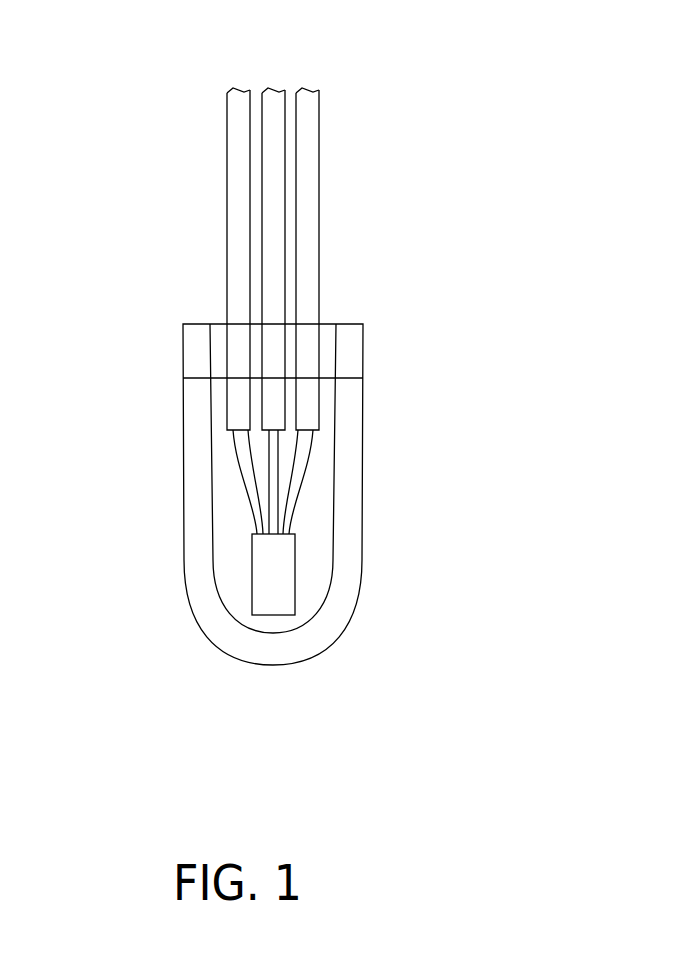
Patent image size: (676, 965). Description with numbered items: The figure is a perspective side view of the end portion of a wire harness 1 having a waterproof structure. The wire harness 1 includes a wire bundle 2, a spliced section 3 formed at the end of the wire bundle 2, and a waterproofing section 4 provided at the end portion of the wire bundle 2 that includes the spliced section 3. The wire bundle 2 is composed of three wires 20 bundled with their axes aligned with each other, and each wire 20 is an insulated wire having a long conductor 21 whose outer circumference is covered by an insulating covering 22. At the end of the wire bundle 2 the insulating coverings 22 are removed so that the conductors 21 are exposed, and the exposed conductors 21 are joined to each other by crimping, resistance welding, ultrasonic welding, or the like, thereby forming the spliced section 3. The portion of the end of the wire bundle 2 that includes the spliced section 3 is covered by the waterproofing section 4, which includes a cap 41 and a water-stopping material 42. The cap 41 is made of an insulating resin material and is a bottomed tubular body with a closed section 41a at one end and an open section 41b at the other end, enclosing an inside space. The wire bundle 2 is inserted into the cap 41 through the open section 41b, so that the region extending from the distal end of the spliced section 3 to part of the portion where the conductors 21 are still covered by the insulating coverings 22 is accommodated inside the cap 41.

The wire harness 1 is at (312, 401).
The wire bundle 2 is at (276, 280).
The wires 20 is at (187, 82).
The insulating covering 22 is at (305, 239).
The conductor 21 is at (287, 505).
The spliced section 3 is at (273, 590).
The waterproofing section 4 is at (390, 682).
The cap 41 is at (194, 413).
The closed section 41a is at (273, 652).
The open section 41b is at (220, 324).
The water-stopping material 42 is at (237, 557).